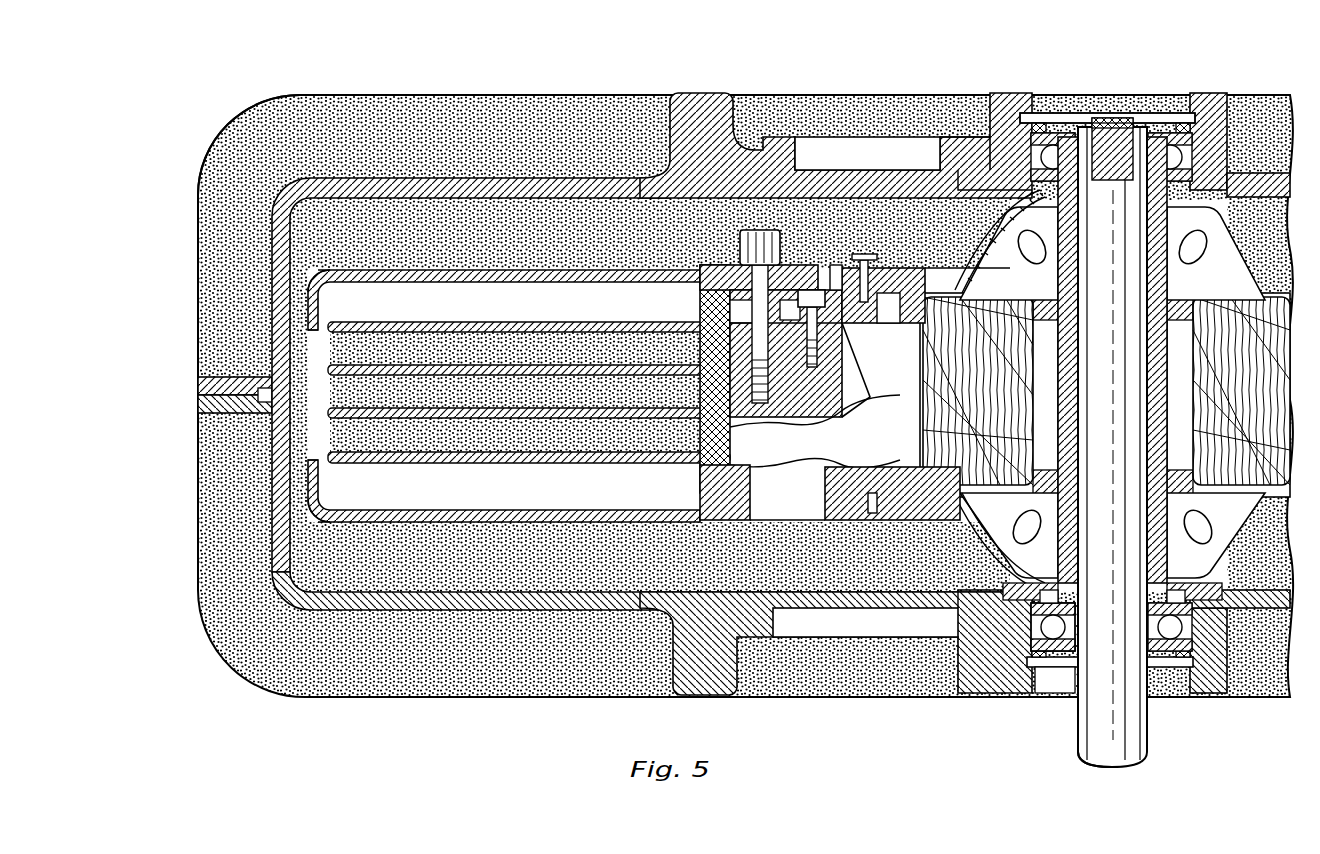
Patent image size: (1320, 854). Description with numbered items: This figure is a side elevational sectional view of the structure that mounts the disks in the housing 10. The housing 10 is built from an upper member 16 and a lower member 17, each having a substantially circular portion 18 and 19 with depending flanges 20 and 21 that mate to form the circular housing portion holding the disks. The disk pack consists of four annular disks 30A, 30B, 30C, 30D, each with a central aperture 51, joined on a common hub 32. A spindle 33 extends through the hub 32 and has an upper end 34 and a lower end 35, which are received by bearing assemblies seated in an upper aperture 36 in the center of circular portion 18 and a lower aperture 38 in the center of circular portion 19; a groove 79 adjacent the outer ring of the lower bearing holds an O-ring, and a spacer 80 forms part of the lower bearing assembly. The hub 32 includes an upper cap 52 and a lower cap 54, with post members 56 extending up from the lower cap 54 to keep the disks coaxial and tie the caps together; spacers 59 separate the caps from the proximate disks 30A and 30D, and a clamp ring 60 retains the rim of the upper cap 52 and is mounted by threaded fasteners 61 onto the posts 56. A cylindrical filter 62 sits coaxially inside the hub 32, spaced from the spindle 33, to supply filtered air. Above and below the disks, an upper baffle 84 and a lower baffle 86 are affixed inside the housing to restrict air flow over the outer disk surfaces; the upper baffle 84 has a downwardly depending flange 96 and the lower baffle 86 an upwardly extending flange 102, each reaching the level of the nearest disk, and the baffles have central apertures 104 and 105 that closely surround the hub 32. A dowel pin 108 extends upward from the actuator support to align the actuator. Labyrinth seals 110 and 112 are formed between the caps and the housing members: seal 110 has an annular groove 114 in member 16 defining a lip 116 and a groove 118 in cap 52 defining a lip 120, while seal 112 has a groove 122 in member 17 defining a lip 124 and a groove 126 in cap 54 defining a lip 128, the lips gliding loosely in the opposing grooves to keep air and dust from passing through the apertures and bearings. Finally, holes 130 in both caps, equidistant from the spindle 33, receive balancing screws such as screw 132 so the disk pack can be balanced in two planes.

The housing 10 is at (212, 90).
The upper member 16 is at (452, 95).
The lower member 17 is at (198, 510).
The circular portion 18 is at (280, 108).
The circular portion 19 is at (325, 698).
The depending flange 20 is at (198, 304).
The depending flange 21 is at (198, 440).
The annular disk 30A is at (420, 322).
The annular disk 30B is at (420, 365).
The annular disk 30C is at (420, 408).
The annular disk 30D is at (432, 452).
The hub 32 is at (948, 250).
The spindle 33 is at (1130, 707).
The upper end 34 is at (1138, 130).
The lower end 35 is at (1078, 760).
The upper aperture 36 is at (1073, 88).
The lower aperture 38 is at (1055, 684).
The central aperture 51 is at (740, 325).
The upper cap 52 is at (908, 270).
The lower cap 54 is at (907, 493).
The post member 56 is at (840, 357).
The spacer 59 is at (730, 308).
The clamp ring 60 is at (810, 290).
The threaded fastener 61 is at (763, 236).
The cylindrical filter 62 is at (925, 402).
The groove 79 is at (1023, 150).
The spacer 80 is at (1030, 627).
The upper baffle 84 is at (520, 276).
The lower baffle 86 is at (400, 512).
The flange 96 is at (320, 305).
The flange 102 is at (326, 483).
The central aperture 104 is at (700, 265).
The central aperture 105 is at (700, 500).
The dowel pin 108 is at (773, 137).
The labyrinth seal 110 is at (940, 160).
The labyrinth seal 112 is at (952, 608).
The annular groove 114 is at (983, 180).
The lip 116 is at (1040, 192).
The groove 118 is at (1008, 210).
The lip 120 is at (1013, 197).
The groove 122 is at (995, 603).
The lip 124 is at (1063, 600).
The groove 126 is at (1060, 574).
The lip 128 is at (990, 560).
The hole 130 is at (840, 265).
The balancing screw 132 is at (866, 254).